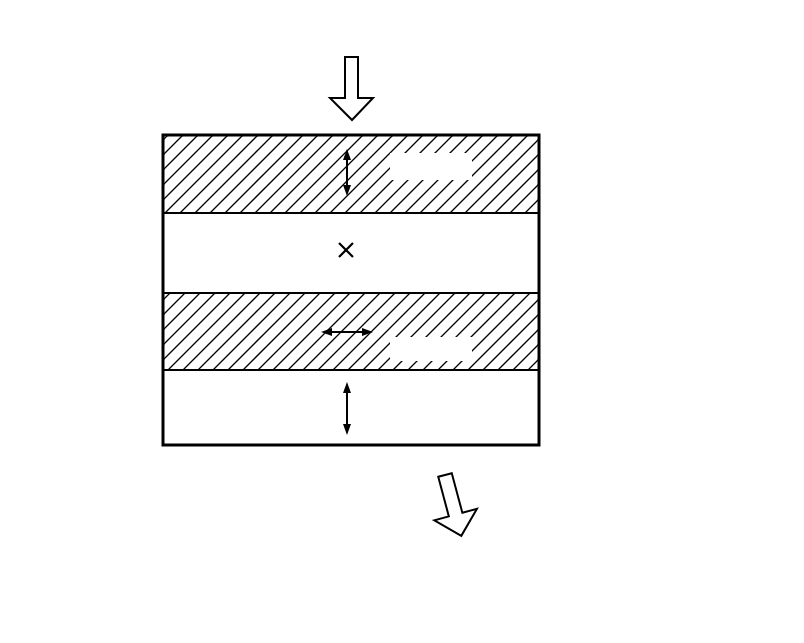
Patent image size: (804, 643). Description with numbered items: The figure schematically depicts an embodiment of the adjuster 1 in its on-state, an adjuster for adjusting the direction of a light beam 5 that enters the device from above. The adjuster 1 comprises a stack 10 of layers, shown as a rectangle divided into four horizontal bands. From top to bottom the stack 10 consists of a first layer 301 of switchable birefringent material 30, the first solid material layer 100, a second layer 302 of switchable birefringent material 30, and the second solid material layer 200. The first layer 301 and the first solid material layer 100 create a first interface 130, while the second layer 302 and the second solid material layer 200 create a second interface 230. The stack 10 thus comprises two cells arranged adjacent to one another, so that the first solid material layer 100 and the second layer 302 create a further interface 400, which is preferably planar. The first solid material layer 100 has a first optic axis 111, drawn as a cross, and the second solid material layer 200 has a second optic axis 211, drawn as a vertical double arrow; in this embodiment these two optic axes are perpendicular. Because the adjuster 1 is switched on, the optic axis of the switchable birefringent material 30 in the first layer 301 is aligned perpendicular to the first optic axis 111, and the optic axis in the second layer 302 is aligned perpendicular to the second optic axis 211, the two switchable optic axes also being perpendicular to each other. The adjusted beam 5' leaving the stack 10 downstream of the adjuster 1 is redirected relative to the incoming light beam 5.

The adjuster 1 is at (104, 91).
The stack 10 is at (557, 108).
The light beam 5 is at (329, 88).
The adjusted beam 5' is at (431, 505).
The switchable birefringent material 30 is at (309, 252).
The first layer of switchable birefringent material 301 is at (168, 192).
The second layer of switchable material 302 is at (168, 348).
The first solid material layer 100 is at (168, 250).
The second solid material layer 200 is at (168, 409).
The first optic axis 111 is at (355, 252).
The second optic axis 211 is at (350, 405).
The first interface 130 is at (513, 213).
The further interface 400 is at (513, 292).
The second interface 230 is at (513, 371).